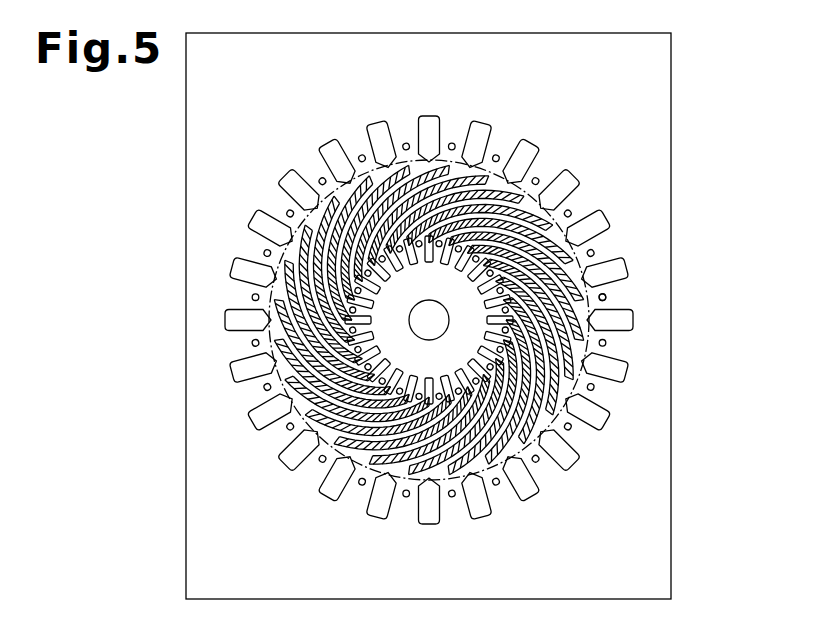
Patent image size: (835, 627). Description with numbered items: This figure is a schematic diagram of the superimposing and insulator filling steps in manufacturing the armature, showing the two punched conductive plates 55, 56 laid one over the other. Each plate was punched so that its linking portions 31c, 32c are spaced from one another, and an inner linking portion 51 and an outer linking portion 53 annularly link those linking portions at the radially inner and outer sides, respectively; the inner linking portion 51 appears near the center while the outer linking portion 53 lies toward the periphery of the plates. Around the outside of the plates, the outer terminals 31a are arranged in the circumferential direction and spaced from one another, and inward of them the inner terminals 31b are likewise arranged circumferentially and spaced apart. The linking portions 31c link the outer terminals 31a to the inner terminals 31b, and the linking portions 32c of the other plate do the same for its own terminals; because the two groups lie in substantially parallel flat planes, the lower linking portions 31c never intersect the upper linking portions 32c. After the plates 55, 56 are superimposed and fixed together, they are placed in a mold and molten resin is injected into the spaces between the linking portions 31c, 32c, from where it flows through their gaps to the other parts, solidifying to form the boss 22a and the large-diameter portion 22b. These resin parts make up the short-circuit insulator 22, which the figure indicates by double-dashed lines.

The conductive plate 55 is at (671, 77).
The conductive plate 56 is at (489, 316).
The outer linking portion 53 is at (632, 122).
The inner linking portion 51 is at (440, 372).
The short-circuit insulator 22 is at (590, 244).
The boss 22a is at (603, 337).
The large-diameter portion 22b is at (603, 288).
The outer terminal 31a is at (524, 170).
The inner terminal 31b is at (398, 254).
The linking portion 31c is at (402, 160).
The linking portion 32c is at (487, 150).